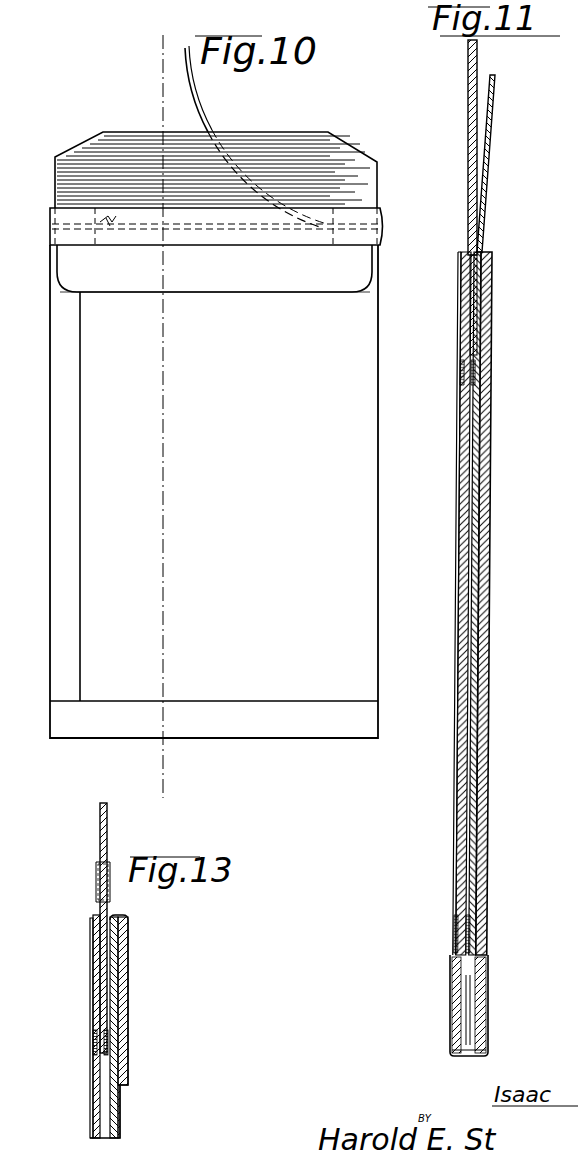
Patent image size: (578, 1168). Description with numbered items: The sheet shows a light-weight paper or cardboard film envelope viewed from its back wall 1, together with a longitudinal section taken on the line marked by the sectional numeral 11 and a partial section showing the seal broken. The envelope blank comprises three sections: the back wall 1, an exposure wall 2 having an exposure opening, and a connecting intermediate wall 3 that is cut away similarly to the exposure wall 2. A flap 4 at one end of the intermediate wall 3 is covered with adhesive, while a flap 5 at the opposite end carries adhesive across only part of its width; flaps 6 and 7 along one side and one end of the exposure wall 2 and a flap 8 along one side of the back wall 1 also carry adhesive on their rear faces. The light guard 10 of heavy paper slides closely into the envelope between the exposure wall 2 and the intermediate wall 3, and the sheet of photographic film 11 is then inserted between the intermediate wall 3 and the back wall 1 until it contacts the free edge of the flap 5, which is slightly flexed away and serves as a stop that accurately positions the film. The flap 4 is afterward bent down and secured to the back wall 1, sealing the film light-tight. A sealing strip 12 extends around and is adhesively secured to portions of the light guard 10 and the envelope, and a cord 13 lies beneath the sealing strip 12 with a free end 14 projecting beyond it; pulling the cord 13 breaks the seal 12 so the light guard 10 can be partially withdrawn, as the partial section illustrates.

In FIG. 10, the back wall 1 is at (105, 470).
In FIG. 11, the back wall 1 is at (489, 483).
In FIG. 13, the back wall 1 is at (118, 1136).
In FIG. 11, the exposure wall 2 is at (466, 318).
In FIG. 13, the exposure wall 2 is at (97, 1004).
In FIG. 11, the intermediate wall 3 is at (470, 334).
In FIG. 13, the intermediate wall 3 is at (107, 986).
In FIG. 10, the flap 4 is at (264, 283).
In FIG. 11, the flap 4 is at (489, 127).
In FIG. 13, the flap 4 is at (122, 1017).
In FIG. 11, the flap 5 is at (482, 993).
In FIG. 10, the flap 6 is at (70, 378).
In FIG. 10, the flap 7 is at (259, 712).
In FIG. 11, the flap 7 is at (487, 1024).
In FIG. 11, the flap 8 is at (460, 348).
In FIG. 13, the flap 8 is at (93, 986).
In FIG. 10, the light guard 10 is at (330, 122).
In FIG. 11, the light guard 10 is at (468, 218).
In FIG. 13, the light guard 10 is at (100, 1054).
In FIG. 10, the sheet of photographic film 11 is at (105, 35).
In FIG. 11, the sheet of photographic film 11 is at (482, 402).
In FIG. 13, the sheet of photographic film 11 is at (110, 1118).
In FIG. 10, the sealing strip 12 is at (372, 216).
In FIG. 13, the sealing strip 12 is at (130, 948).
In FIG. 10, the cord 13 is at (120, 236).
In FIG. 13, the cord 13 is at (103, 882).
In FIG. 10, the free end 14 is at (240, 108).